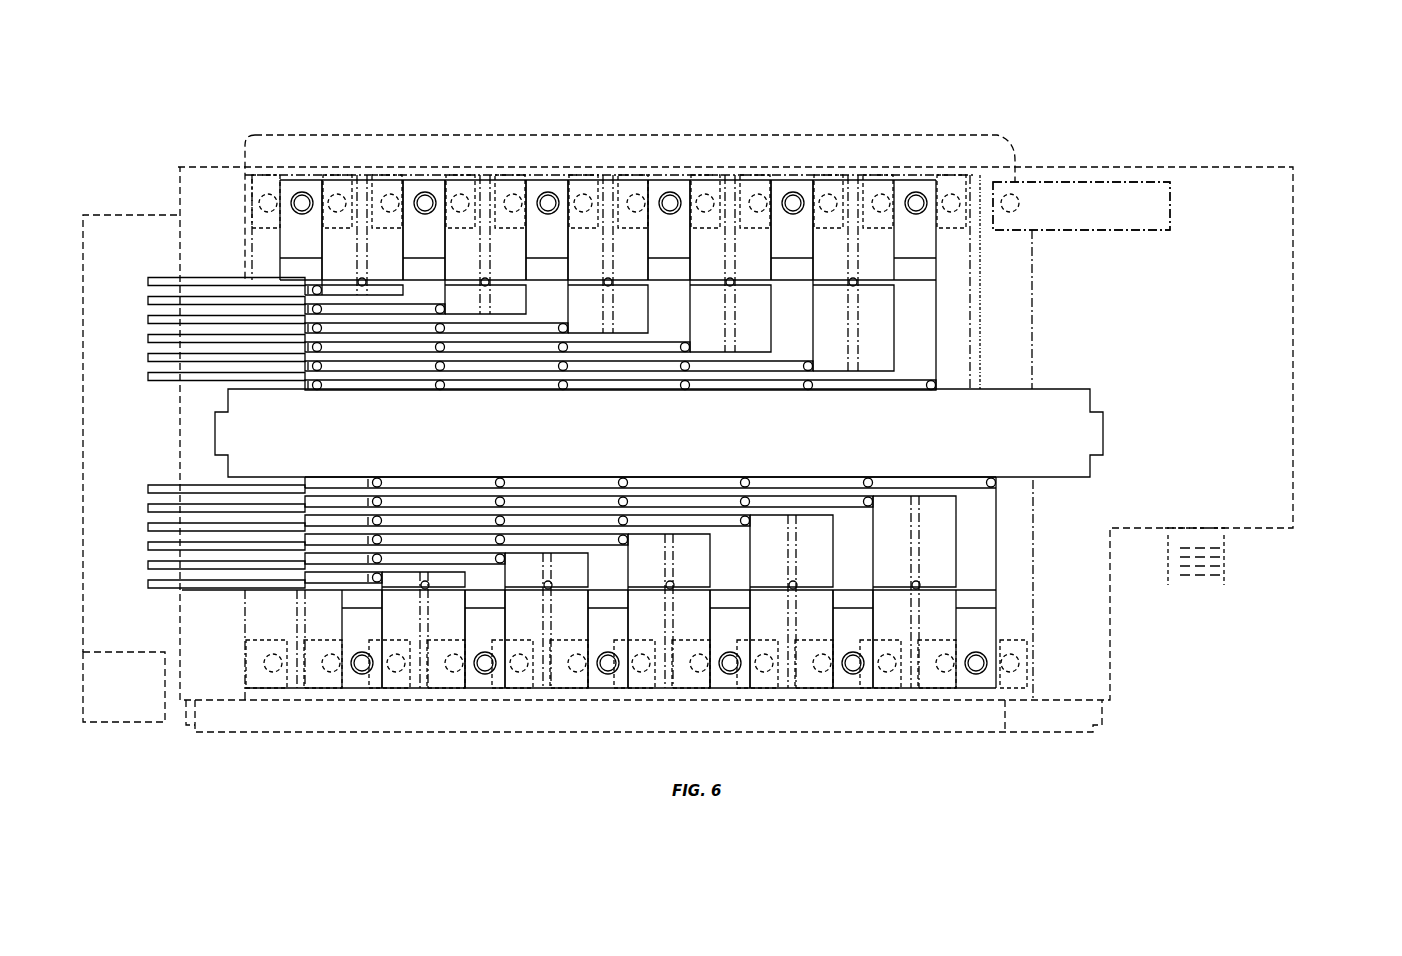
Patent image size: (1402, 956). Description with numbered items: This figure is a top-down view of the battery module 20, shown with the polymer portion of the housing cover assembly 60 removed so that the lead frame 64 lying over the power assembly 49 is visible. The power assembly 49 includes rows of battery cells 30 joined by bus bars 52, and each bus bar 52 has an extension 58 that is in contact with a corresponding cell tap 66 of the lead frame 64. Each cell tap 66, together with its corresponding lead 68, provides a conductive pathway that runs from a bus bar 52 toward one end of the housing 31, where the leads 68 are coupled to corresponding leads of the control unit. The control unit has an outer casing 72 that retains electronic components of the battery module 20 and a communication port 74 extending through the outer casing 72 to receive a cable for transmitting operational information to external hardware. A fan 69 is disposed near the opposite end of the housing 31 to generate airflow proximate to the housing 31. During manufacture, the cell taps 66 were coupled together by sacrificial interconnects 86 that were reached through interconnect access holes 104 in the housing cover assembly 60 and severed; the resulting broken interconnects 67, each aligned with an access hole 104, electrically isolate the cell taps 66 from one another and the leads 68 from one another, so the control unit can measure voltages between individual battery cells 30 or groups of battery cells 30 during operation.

The battery module 20 is at (1022, 90).
The battery cell 30 is at (945, 618).
The housing 31 is at (1075, 167).
The power assembly 49 is at (880, 185).
The bus bar 52 is at (266, 190).
The extension 58 is at (296, 180).
The housing cover assembly 60 is at (925, 178).
The lead frame 64 is at (925, 178).
The cell tap 66 is at (281, 232).
The broken interconnect 67 is at (668, 592).
The lead 68 is at (148, 320).
The fan 69 is at (1298, 218).
The outer casing 72 is at (110, 432).
The communication port 74 is at (125, 724).
The sacrificial interconnect 86 is at (604, 277).
The interconnect access hole 104 is at (612, 279).